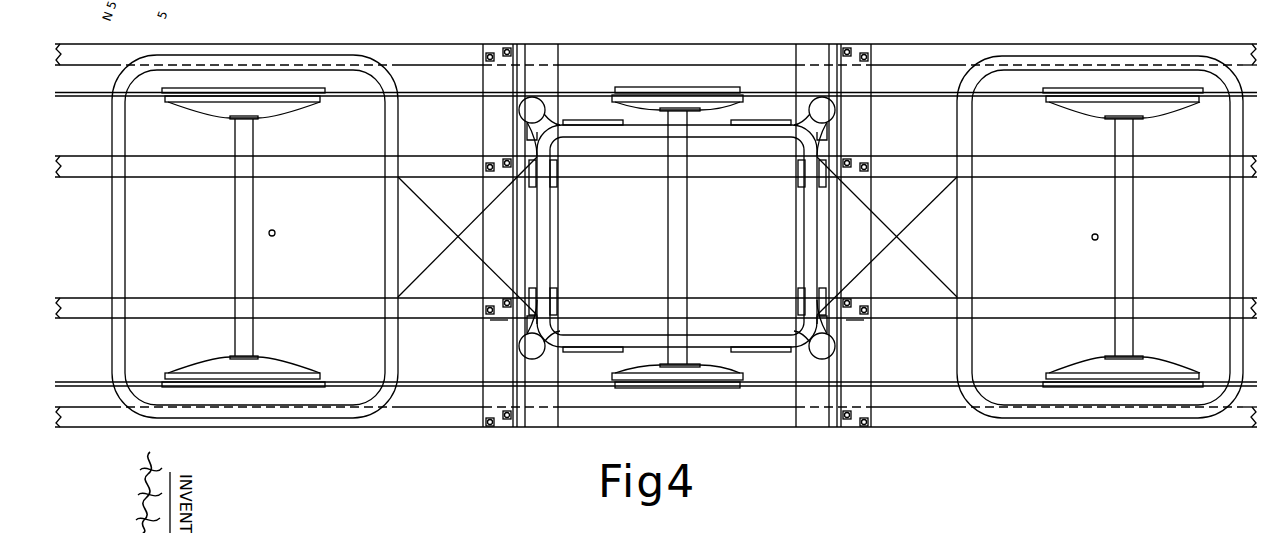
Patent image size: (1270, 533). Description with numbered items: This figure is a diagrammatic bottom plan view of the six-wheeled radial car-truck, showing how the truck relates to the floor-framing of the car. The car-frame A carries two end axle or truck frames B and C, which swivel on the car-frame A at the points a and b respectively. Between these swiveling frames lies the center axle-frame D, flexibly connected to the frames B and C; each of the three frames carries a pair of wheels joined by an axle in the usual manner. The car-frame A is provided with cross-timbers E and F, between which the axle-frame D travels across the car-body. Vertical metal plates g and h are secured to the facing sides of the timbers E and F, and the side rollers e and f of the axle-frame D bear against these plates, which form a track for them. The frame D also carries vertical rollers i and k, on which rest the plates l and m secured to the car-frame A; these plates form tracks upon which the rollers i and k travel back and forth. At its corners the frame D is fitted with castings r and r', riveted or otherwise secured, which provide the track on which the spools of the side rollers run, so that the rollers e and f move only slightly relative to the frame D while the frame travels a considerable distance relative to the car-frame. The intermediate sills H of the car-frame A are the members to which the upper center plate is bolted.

The car-frame A is at (656, 42).
The axle-frame B is at (1100, 237).
The axle-frame C is at (255, 236).
The center axle-frame D is at (677, 236).
The cross-timber E is at (854, 333).
The cross-timber F is at (497, 333).
The intermediate sills H is at (656, 238).
The swiveling point a is at (1091, 234).
The swiveling point b is at (276, 231).
The side roller e is at (835, 110).
The side roller f is at (520, 346).
The vertical metal plate g is at (841, 248).
The vertical metal plate h is at (513, 232).
The vertical roller i is at (796, 182).
The vertical roller k is at (558, 182).
The plate l is at (806, 60).
The plate m is at (538, 54).
The corner casting r is at (670, 240).
The corner casting r' is at (677, 238).